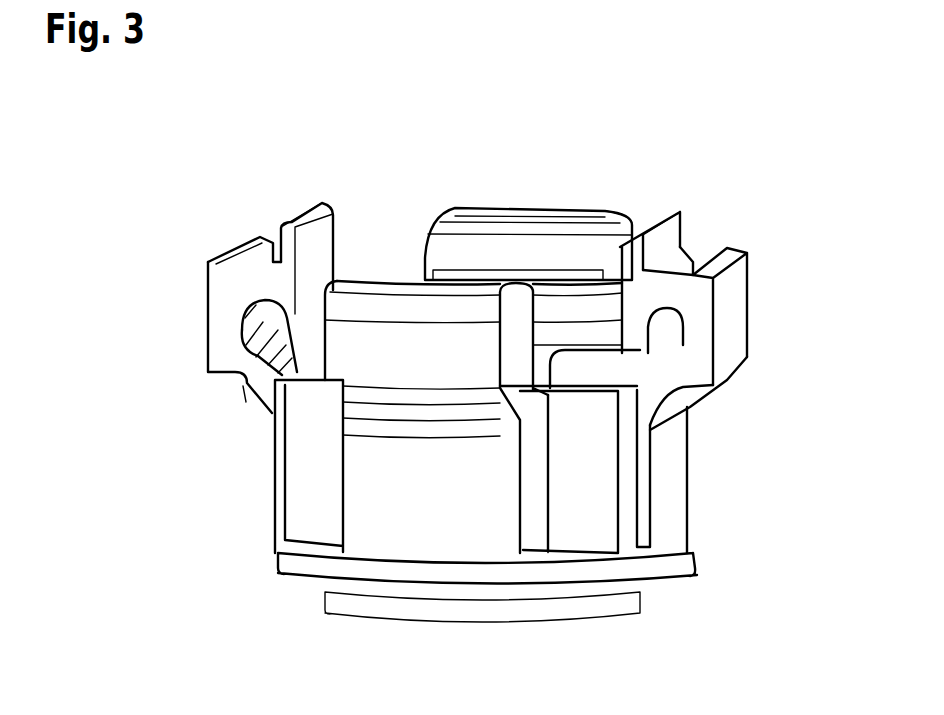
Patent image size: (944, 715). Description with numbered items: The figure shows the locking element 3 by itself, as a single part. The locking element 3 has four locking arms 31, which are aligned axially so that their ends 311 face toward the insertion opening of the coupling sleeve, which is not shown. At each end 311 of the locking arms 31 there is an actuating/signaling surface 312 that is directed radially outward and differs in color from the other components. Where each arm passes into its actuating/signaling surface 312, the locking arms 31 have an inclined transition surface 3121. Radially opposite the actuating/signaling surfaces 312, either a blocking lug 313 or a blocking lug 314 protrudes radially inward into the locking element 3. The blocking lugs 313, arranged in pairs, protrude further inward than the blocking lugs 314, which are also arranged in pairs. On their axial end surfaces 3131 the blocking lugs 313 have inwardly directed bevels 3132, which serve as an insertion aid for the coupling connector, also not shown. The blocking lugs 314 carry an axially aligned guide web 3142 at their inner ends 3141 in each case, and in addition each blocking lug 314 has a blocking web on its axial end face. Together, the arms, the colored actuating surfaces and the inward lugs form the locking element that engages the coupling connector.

The locking element 3 is at (795, 172).
The locking arm 31 is at (365, 498).
The end 311 is at (300, 188).
The actuating/signaling surface 312 is at (190, 304).
The inclined transition surface 3121 is at (241, 387).
The blocking lug 313 is at (520, 340).
The axial end surface 3131 is at (483, 242).
The bevel 3132 is at (588, 247).
The blocking lug 314 is at (461, 337).
The inner end 3141 is at (260, 340).
The guide web 3142 is at (262, 198).